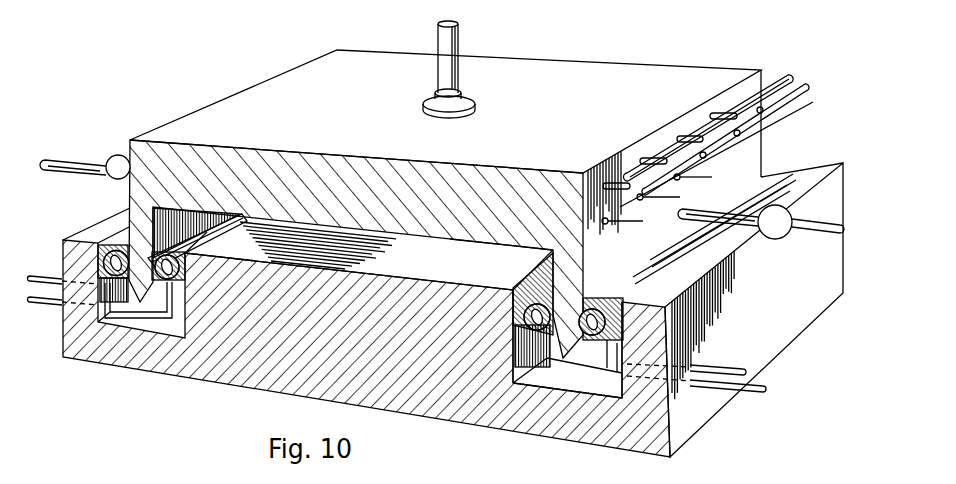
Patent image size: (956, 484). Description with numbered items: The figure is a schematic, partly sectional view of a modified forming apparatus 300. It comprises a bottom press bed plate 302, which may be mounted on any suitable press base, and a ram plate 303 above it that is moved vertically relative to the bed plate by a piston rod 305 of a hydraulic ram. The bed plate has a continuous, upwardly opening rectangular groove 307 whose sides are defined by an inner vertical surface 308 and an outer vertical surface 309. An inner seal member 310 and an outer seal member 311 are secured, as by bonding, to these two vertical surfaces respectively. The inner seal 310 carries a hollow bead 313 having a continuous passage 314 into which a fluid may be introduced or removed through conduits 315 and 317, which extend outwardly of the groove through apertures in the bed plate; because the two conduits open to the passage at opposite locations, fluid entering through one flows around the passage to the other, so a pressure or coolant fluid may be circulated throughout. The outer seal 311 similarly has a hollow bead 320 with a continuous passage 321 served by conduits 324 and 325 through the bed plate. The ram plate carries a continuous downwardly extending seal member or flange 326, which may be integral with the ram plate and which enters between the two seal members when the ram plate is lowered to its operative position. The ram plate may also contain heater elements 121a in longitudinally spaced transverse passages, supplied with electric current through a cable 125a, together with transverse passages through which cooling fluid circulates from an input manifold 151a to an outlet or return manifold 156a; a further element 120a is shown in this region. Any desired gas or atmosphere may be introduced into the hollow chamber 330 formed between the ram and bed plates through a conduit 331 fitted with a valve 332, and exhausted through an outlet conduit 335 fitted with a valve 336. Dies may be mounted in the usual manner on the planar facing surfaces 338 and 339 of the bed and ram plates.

The forming apparatus 300 is at (670, 48).
The bed plate 302 is at (258, 385).
The ram plate 303 is at (240, 100).
The piston rod 305 is at (462, 38).
The rectangular groove 307 is at (548, 398).
The inner vertical surface 308 is at (520, 367).
The outer vertical surface 309 is at (621, 378).
The inner seal member 310 is at (214, 230).
The outer seal member 311 is at (652, 262).
The hollow bead 313 is at (552, 273).
The continuous passage 314 is at (530, 295).
The conduit 315 is at (45, 306).
The conduit 317 is at (753, 392).
The hollow bead 320 is at (686, 241).
The continuous passage 321 is at (598, 305).
The conduit 324 is at (40, 275).
The conduit 325 is at (742, 352).
The seal member or flange 326 is at (136, 212).
The hollow chamber 330 is at (488, 240).
The conduit 331 is at (61, 158).
The valve 332 is at (117, 155).
The outlet conduit 335 is at (820, 238).
The valve 336 is at (774, 240).
The planar facing surface 338 is at (413, 266).
The planar facing surface 339 is at (486, 243).
The input manifold 151a is at (783, 78).
The outlet manifold 156a is at (806, 84).
The cable 125a is at (796, 116).
The electrode 120a is at (606, 224).
The heater elements 121a is at (637, 198).